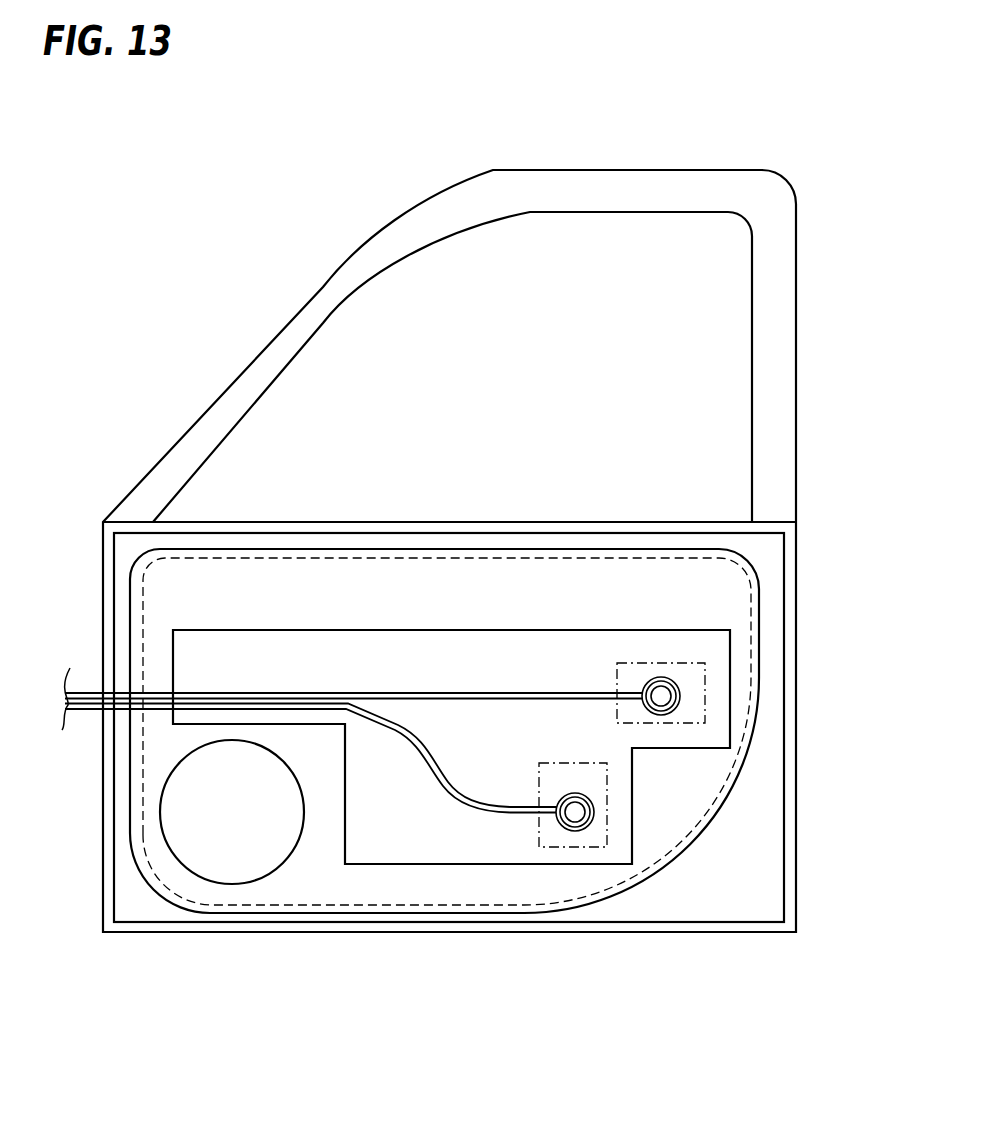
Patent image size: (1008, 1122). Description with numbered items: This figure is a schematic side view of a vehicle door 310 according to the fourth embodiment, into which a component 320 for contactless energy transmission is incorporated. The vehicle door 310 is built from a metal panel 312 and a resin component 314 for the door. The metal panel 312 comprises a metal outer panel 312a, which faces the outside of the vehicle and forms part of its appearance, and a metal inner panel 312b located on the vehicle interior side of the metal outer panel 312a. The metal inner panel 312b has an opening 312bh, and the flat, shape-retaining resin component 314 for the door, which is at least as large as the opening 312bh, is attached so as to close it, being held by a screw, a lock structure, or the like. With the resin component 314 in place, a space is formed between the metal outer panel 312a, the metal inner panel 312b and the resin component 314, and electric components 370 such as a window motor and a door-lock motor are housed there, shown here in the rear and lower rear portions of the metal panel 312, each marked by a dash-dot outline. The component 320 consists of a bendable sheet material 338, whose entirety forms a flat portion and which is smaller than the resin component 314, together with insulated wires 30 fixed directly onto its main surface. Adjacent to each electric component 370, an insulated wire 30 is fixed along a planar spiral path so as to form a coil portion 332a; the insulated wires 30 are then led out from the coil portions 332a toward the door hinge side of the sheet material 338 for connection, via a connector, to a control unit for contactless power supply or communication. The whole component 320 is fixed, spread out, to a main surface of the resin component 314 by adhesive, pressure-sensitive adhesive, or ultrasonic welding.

The vehicle door 310 is at (382, 178).
The metal panel 312 is at (449, 598).
The metal outer panel 312a is at (449, 574).
The metal inner panel 312b is at (790, 996).
The opening 312bh is at (678, 855).
The resin component for the door 314 is at (632, 548).
The component for contactless energy transmission 320 is at (451, 715).
The sheet material 338 is at (513, 629).
The insulated wire 30 is at (455, 692).
The coil portion 332a is at (648, 684).
The electric component 370 is at (672, 662).